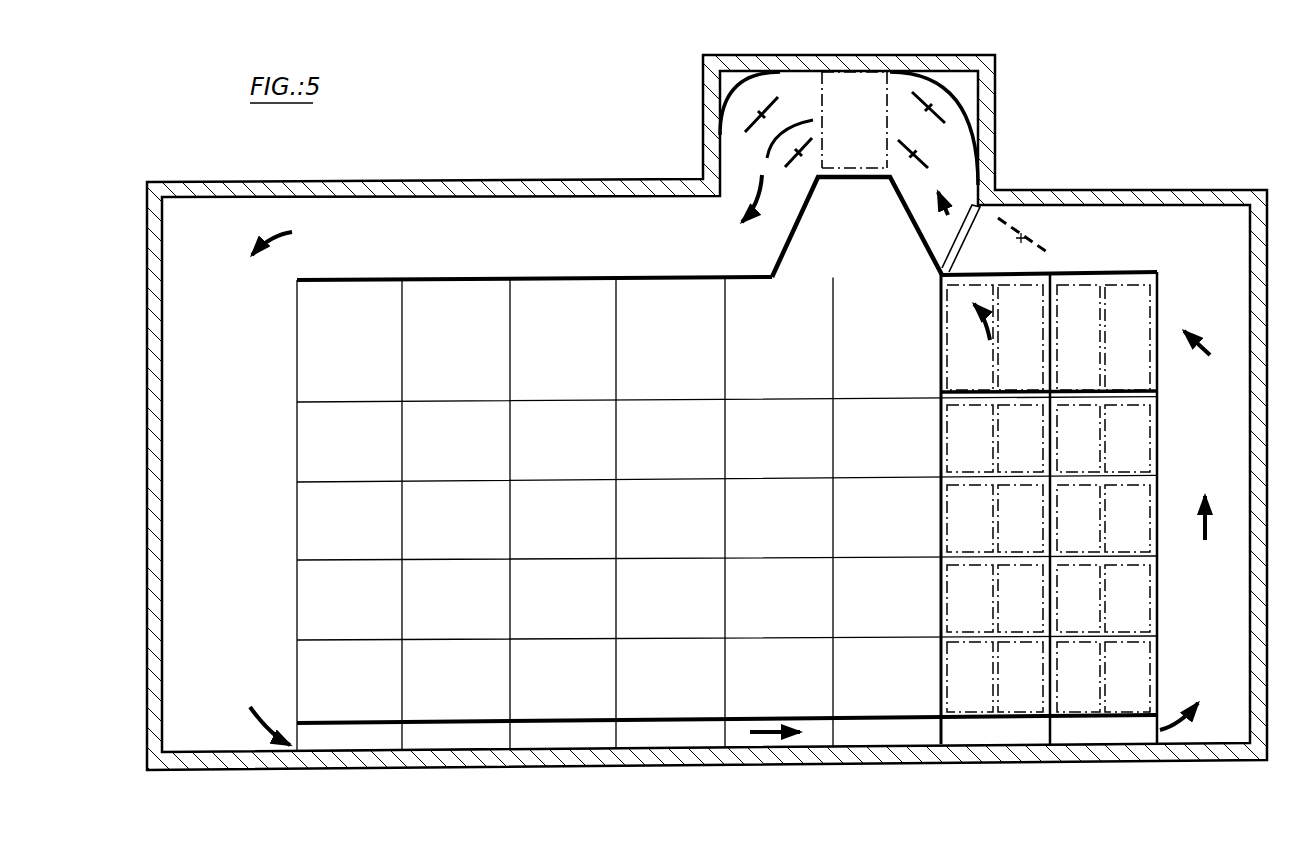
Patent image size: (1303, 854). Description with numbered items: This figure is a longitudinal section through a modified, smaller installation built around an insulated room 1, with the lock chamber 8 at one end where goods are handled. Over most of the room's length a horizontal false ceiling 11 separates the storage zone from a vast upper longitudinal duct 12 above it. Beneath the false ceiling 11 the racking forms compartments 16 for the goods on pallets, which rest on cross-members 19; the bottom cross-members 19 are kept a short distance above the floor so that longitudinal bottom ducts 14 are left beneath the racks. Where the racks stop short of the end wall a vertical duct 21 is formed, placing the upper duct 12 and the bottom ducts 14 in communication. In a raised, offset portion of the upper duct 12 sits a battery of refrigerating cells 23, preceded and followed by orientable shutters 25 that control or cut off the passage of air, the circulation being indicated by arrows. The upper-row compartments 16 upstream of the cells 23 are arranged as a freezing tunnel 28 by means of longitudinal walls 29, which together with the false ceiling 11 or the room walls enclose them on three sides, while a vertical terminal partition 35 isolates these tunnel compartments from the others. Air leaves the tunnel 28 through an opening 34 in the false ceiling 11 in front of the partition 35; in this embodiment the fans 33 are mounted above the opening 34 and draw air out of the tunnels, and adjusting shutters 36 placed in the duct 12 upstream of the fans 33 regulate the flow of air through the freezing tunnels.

The room 1 is at (432, 186).
The lock chamber 8 is at (238, 601).
The false ceiling 11 is at (458, 279).
The upper longitudinal duct 12 is at (411, 251).
The longitudinal bottom ducts 14 is at (481, 746).
The compartments 16 is at (318, 445).
The cross-members 19 is at (573, 722).
The vertical duct 21 is at (1220, 606).
The refrigerating cells 23 is at (868, 108).
The orientable shutters 25 is at (790, 158).
The tunnel 28 is at (1077, 302).
The longitudinal walls 29 is at (1130, 390).
The fans 33 is at (960, 230).
The opening 34 is at (968, 268).
The vertical terminal partition 35 is at (938, 322).
The adjusting shutters 36 is at (1013, 223).